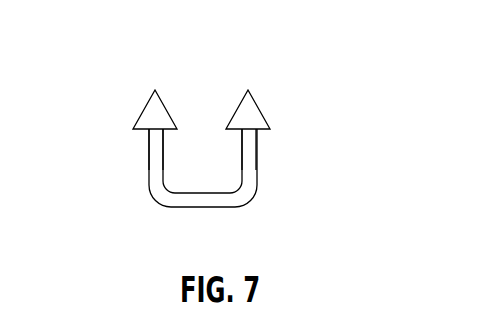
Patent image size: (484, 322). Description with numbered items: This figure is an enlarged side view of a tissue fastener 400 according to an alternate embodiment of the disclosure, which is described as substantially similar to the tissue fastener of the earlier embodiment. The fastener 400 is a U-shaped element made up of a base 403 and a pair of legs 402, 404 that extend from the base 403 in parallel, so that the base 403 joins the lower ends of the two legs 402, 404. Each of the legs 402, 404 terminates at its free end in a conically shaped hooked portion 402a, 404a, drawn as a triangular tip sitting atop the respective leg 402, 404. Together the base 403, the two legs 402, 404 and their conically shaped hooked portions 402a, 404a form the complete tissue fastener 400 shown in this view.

The tissue fastener 400 is at (296, 55).
The leg 402 is at (153, 155).
The conically shaped hooked portion 402a is at (148, 113).
The base 403 is at (202, 207).
The leg 404 is at (255, 152).
The conically shaped hooked portion 404a is at (252, 113).